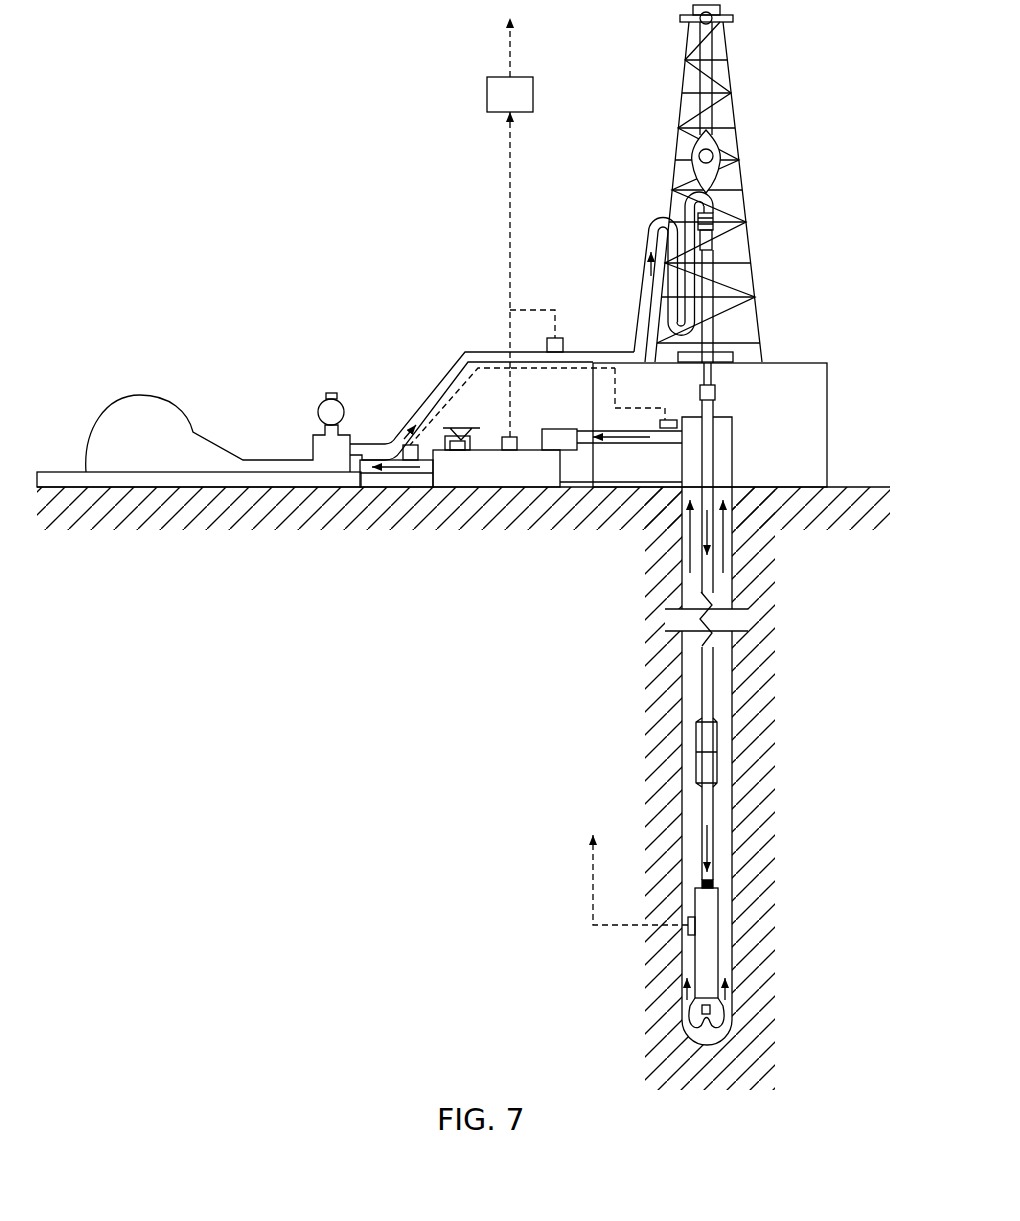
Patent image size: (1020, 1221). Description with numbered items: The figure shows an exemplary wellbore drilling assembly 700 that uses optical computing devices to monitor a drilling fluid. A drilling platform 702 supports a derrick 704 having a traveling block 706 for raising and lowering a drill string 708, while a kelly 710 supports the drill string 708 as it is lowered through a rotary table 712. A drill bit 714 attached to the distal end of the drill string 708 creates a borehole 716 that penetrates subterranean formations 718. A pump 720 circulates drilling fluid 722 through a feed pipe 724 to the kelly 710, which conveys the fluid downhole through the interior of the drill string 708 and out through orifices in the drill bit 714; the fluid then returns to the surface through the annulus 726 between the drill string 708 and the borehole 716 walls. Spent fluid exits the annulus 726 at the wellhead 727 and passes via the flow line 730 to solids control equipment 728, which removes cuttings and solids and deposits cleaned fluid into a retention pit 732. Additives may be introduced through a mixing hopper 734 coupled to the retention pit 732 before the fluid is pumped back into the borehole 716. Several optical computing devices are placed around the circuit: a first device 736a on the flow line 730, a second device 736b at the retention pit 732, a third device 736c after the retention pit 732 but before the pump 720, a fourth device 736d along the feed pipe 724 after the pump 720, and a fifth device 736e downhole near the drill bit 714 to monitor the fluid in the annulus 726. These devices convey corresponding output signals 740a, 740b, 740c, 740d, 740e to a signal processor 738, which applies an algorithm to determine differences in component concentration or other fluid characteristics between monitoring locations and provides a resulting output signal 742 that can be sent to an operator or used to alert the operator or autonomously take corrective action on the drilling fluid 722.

The wellbore drilling assembly 700 is at (432, 90).
The drilling platform 702 is at (828, 372).
The derrick 704 is at (733, 103).
The traveling block 706 is at (722, 147).
The drill string 708 is at (713, 590).
The kelly 710 is at (713, 272).
The rotary table 712 is at (735, 357).
The drill bit 714 is at (722, 1008).
The borehole 716 is at (735, 685).
The subterranean formations 718 is at (575, 713).
The pump 720 is at (153, 457).
The drilling fluid 722 is at (372, 445).
The feed pipe 724 is at (478, 352).
The annulus 726 is at (722, 843).
The wellhead 727 is at (722, 410).
The solids control equipment 728 is at (560, 452).
The flow line 730 is at (663, 444).
The retention pit 732 is at (527, 480).
The mixing hopper 734 is at (448, 449).
The first device 736a is at (684, 398).
The second device 736b is at (520, 437).
The third device 736c is at (409, 443).
The fourth device 736d is at (557, 338).
The fifth device 736e is at (688, 928).
The signal processor 738 is at (527, 109).
The first output signal 740a is at (636, 408).
The second output signal 740b is at (512, 402).
The third output signal 740c is at (467, 380).
The fourth output signal 740d is at (540, 308).
The fifth output signal 740e is at (593, 870).
The resulting output signal 742 is at (511, 40).